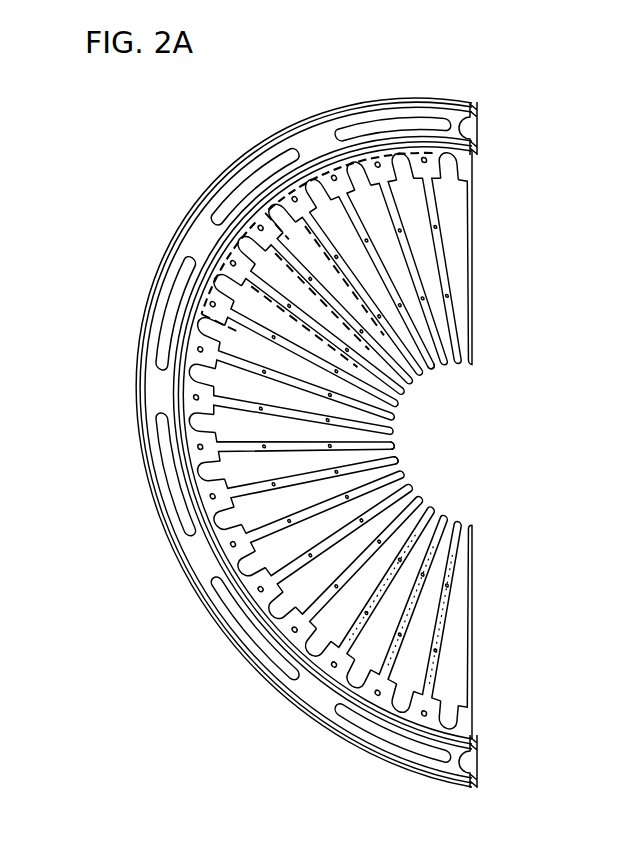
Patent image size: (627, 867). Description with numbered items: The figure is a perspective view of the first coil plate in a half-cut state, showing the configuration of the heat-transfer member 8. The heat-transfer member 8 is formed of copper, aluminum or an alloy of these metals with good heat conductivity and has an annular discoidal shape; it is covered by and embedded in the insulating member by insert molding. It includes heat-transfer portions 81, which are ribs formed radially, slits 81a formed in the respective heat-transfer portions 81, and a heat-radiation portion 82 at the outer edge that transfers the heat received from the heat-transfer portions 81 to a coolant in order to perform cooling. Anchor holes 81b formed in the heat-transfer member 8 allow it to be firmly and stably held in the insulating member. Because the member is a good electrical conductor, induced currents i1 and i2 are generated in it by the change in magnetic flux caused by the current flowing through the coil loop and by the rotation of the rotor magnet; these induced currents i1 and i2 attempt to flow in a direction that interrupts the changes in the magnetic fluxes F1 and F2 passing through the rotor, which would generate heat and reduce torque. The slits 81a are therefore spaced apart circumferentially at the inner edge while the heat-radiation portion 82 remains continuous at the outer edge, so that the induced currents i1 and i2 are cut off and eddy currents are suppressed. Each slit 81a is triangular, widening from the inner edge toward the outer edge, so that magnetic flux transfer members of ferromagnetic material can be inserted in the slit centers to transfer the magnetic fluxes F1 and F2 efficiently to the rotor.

The heat-transfer member 8 is at (510, 149).
The heat-transfer portion 81 is at (447, 251).
The slit 81a is at (436, 372).
The anchor hole 81b is at (440, 562).
The heat-radiation portion 82 is at (398, 101).
The induced current i1 is at (235, 184).
The induced current i2 is at (316, 136).
The magnetic flux F1 is at (334, 284).
The magnetic flux F2 is at (386, 262).